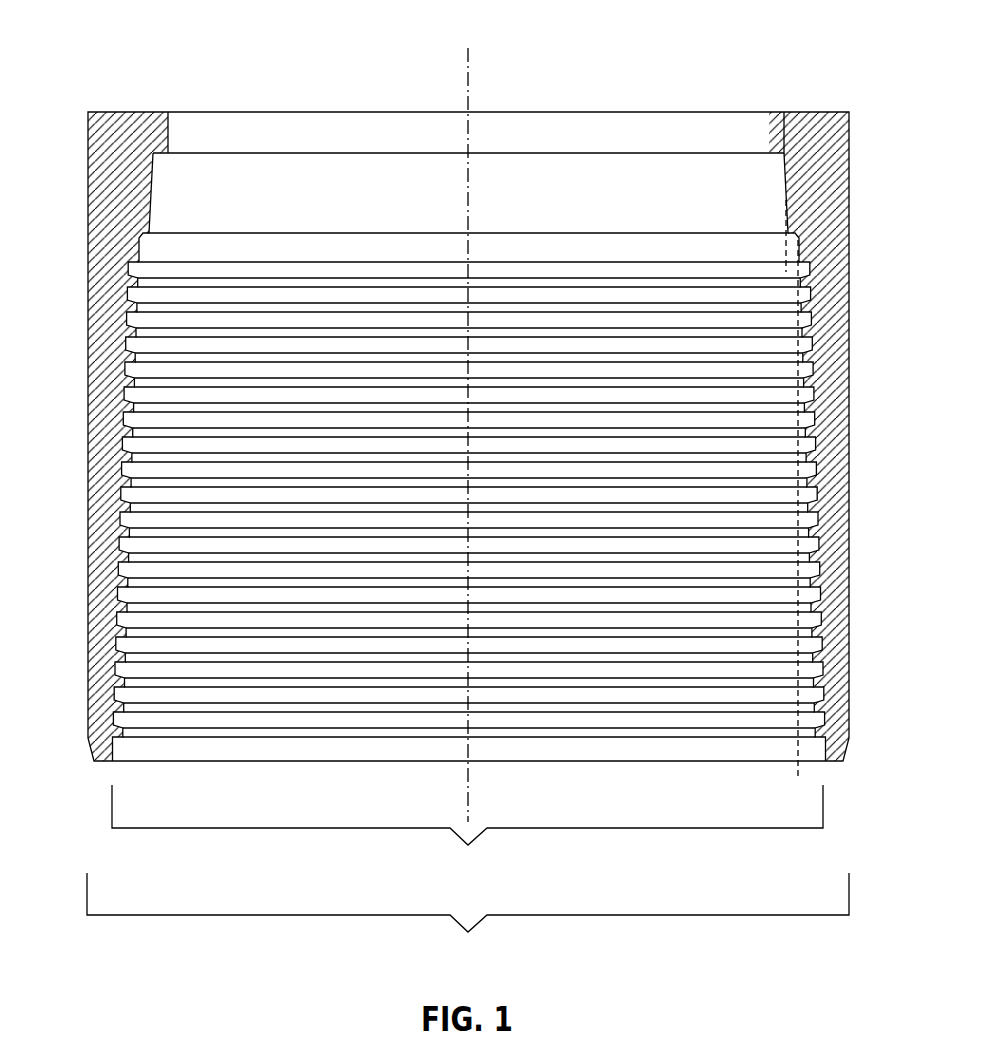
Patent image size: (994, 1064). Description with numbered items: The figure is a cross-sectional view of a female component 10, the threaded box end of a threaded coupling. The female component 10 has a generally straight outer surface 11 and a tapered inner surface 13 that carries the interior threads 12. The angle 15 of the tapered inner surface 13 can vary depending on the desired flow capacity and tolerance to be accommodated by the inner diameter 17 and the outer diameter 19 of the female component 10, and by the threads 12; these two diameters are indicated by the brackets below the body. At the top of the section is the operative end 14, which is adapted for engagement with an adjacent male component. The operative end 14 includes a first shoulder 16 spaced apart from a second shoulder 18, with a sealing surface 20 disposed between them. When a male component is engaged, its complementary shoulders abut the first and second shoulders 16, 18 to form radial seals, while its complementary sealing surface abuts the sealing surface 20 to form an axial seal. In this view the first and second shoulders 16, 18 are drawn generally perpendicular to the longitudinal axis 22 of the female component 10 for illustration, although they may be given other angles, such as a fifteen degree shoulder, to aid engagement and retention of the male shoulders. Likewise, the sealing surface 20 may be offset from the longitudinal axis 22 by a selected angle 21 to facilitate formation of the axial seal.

The female component 10 is at (102, 495).
The outer surface 11 is at (848, 454).
The interior threads 12 is at (120, 582).
The tapered inner surface 13 is at (118, 622).
The operative end 14 is at (179, 101).
The angle of the tapered inner surface 15 is at (801, 689).
The first shoulder 16 is at (160, 155).
The inner diameter 17 is at (467, 830).
The second shoulder 18 is at (138, 240).
The outer diameter 19 is at (468, 917).
The sealing surface 20 is at (152, 197).
The angle of the sealing surface 21 is at (787, 249).
The longitudinal axis 22 is at (468, 63).